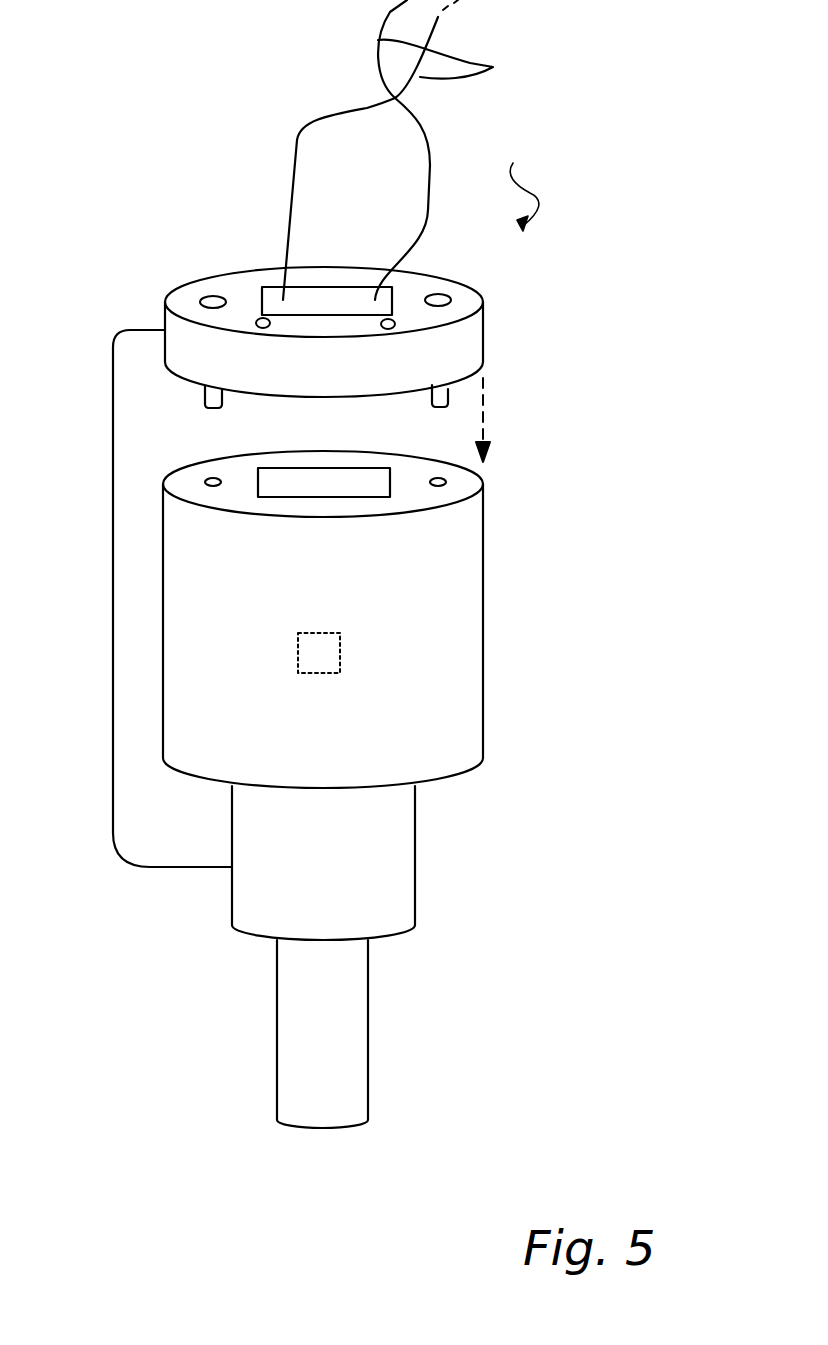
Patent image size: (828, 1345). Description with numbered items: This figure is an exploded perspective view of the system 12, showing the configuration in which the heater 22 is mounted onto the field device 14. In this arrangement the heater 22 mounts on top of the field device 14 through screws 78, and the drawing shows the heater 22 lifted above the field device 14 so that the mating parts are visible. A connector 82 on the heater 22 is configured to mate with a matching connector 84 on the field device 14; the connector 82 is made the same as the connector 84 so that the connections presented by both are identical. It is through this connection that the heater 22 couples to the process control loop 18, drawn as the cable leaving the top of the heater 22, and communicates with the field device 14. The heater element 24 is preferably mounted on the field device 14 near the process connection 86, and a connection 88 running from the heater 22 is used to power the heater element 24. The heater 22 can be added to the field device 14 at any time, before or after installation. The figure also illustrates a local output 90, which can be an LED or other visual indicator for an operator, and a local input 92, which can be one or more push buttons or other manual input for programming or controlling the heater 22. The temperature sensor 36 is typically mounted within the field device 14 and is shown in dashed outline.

The system 12 is at (507, 299).
The field device 14 is at (483, 568).
The process control loop 18 is at (450, 41).
The heater 22 is at (470, 343).
The heater element 24 is at (417, 862).
The temperature sensor 36 is at (313, 673).
The screws 78 is at (207, 302).
The connector 82 is at (321, 298).
The connector 84 is at (355, 497).
The process connection 86 is at (367, 1003).
The connection 88 is at (152, 867).
The local output 90 is at (262, 298).
The local input 92 is at (395, 326).